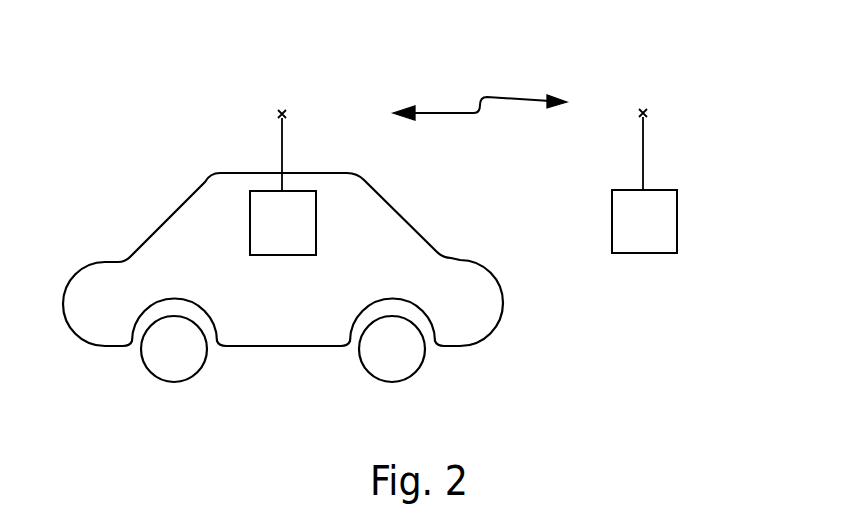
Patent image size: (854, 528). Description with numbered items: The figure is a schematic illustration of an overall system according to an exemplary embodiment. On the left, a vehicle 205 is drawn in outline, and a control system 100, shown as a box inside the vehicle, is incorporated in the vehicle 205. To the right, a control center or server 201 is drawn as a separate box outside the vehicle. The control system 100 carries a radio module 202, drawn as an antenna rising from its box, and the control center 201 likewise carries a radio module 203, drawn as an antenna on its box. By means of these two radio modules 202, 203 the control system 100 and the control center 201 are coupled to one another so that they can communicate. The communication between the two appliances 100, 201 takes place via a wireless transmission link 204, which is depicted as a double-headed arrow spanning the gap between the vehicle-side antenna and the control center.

The control system 100 is at (316, 225).
The control center 201 is at (677, 220).
The radio module 202 is at (281, 150).
The radio module 203 is at (644, 148).
The wireless transmission link 204 is at (505, 95).
The vehicle 205 is at (405, 210).